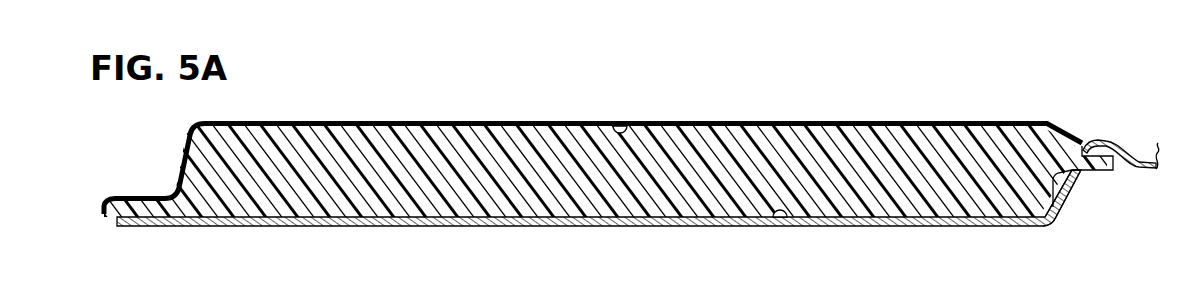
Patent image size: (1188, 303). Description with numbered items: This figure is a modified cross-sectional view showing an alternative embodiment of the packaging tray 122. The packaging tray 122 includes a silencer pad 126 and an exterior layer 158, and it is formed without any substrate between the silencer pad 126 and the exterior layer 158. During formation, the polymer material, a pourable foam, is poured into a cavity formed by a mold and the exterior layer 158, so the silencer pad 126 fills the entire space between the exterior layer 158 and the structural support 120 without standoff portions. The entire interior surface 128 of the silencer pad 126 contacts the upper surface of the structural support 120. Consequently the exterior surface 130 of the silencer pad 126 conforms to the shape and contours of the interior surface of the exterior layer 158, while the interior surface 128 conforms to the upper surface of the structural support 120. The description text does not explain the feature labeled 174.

The exterior layer 158 is at (413, 121).
The dimple / protrusion 174 is at (622, 129).
The exterior surface of the silencer pad 130 is at (785, 121).
The packaging tray 122 is at (1064, 121).
The interior surface of the silencer pad 128 is at (796, 220).
The structural support 120 is at (1006, 227).
The silencer pad 126 is at (1030, 197).